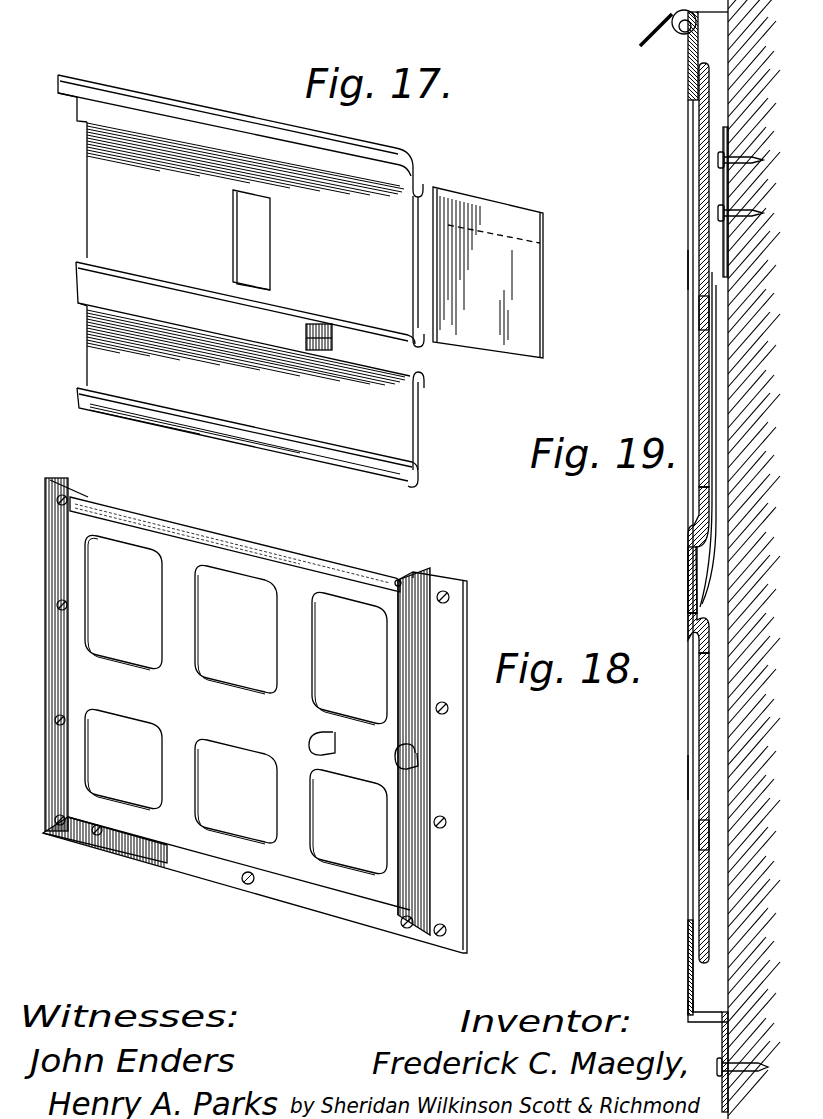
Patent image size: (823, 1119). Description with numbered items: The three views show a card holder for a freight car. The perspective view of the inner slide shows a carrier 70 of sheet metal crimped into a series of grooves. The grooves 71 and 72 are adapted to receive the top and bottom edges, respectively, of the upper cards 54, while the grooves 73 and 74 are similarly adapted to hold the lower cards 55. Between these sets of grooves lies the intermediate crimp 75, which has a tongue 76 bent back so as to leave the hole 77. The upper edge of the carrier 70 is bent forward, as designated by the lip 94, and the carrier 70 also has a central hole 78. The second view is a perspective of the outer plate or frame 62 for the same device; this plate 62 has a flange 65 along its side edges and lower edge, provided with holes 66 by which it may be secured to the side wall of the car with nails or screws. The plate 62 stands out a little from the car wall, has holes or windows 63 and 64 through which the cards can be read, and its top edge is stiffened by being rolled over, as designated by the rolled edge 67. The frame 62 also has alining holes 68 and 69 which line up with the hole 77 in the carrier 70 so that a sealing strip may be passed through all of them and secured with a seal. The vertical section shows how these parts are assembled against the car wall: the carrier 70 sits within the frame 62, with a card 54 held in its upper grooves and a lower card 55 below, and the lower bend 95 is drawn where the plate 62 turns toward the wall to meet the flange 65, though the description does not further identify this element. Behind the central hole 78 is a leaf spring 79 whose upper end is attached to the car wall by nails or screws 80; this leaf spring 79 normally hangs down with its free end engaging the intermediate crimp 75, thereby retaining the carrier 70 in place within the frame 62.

In FIG. 17, the carrier 70 is at (231, 281).
In FIG. 17, the bent forward upper edge 94 is at (192, 113).
In FIG. 19, the bent forward upper edge 94 is at (648, 38).
In FIG. 17, the central hole 78 is at (251, 240).
In FIG. 19, the central hole 78 is at (713, 342).
In FIG. 17, the groove 71 is at (414, 198).
In FIG. 19, the groove 71 is at (712, 72).
In FIG. 17, the tongue 76 is at (318, 324).
In FIG. 17, the hole 77 is at (318, 351).
In FIG. 17, the intermediate crimp 75 is at (245, 323).
In FIG. 19, the intermediate crimp 75 is at (688, 579).
In FIG. 17, the groove 72 is at (413, 330).
In FIG. 19, the groove 72 is at (688, 529).
In FIG. 17, the groove 73 is at (413, 384).
In FIG. 19, the groove 73 is at (696, 632).
In FIG. 17, the groove 74 is at (414, 470).
In FIG. 19, the groove 74 is at (696, 942).
In FIG. 17, the card 54 is at (505, 272).
In FIG. 19, the card 54 is at (700, 312).
In FIG. 18, the rolled-over top edge 67 is at (283, 560).
In FIG. 19, the rolled-over top edge 67 is at (672, 36).
In FIG. 18, the window 63 is at (236, 629).
In FIG. 19, the window 63 is at (688, 278).
In FIG. 18, the outer plate or frame 62 is at (255, 715).
In FIG. 19, the outer plate or frame 62 is at (688, 984).
In FIG. 18, the window 64 is at (123, 759).
In FIG. 19, the window 64 is at (688, 776).
In FIG. 18, the alining hole 69 is at (333, 745).
In FIG. 18, the alining hole 68 is at (418, 759).
In FIG. 18, the flange 65 is at (145, 858).
In FIG. 19, the flange 65 is at (720, 1047).
In FIG. 18, the hole 66 is at (247, 886).
In FIG. 19, the hole 66 is at (762, 1067).
In FIG. 19, the nails or screws 80 is at (722, 148).
In FIG. 19, the leaf spring 79 is at (715, 388).
In FIG. 19, the lower card 55 is at (700, 838).
In FIG. 19, the bend of panel 95 is at (690, 1010).